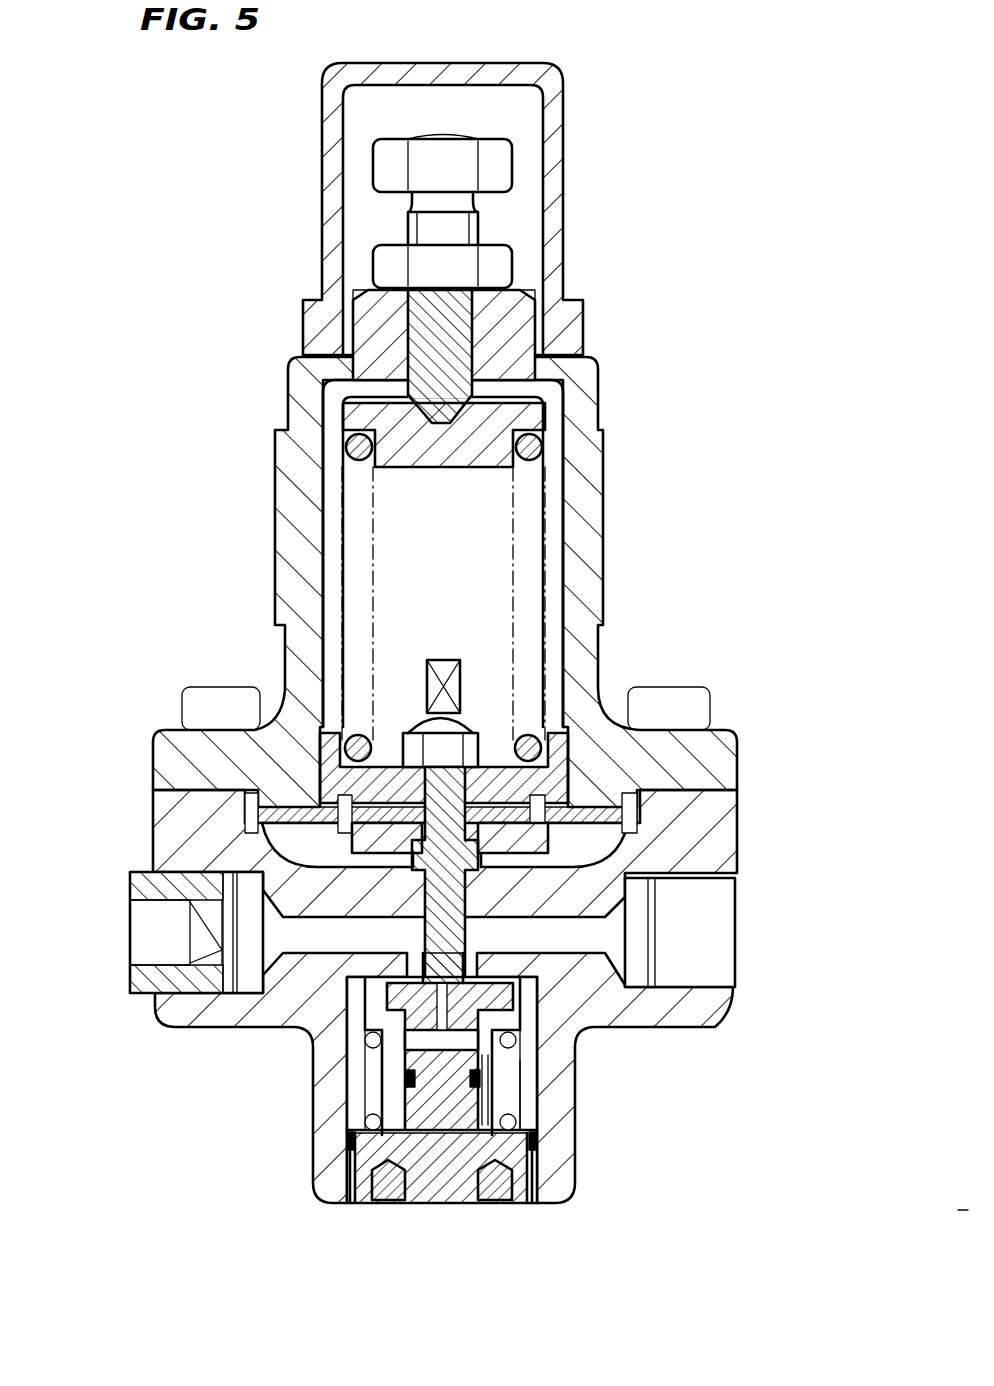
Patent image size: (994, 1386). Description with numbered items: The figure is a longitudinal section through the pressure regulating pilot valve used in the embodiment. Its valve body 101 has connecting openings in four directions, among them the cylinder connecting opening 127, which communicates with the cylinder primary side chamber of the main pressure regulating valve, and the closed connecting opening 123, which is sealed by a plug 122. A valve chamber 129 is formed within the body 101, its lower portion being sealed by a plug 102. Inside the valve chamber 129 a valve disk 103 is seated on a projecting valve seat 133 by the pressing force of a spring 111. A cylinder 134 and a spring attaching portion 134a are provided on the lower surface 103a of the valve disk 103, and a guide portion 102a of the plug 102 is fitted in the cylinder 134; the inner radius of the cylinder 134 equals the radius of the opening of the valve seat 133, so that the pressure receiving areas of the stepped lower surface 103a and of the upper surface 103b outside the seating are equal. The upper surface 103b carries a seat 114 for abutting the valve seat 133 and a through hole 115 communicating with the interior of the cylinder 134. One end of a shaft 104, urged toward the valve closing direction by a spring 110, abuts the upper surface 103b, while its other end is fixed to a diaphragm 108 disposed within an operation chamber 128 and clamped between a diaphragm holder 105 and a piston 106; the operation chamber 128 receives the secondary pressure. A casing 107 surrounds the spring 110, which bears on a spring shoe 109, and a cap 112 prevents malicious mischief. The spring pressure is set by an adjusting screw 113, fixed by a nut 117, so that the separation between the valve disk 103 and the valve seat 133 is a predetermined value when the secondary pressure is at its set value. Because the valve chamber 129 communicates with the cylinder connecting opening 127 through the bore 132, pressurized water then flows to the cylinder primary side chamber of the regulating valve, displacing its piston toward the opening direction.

The valve body 101 is at (740, 836).
The plug 102 is at (435, 1203).
The guide portion 102a is at (350, 1200).
The valve disk 103 is at (530, 1140).
The lower surface 103a is at (373, 1122).
The upper surface 103b is at (365, 1000).
The shaft 104 is at (560, 1040).
The diaphragm holder 105 is at (480, 848).
The piston 106 is at (565, 720).
The casing 107 is at (600, 475).
The diaphragm 108 is at (640, 805).
The spring shoe 109 is at (545, 412).
The spring 110 is at (548, 558).
The spring 111 is at (525, 1120).
The cap 112 is at (565, 90).
The adjusting screw 113 is at (513, 170).
The seat 114 is at (375, 1040).
The through hole 115 is at (440, 1050).
The nut 117 is at (513, 268).
The plug 122 is at (130, 945).
The closed connecting opening 123 is at (185, 965).
The cylinder connecting opening 127 is at (735, 960).
The operation chamber 128 is at (565, 858).
The valve chamber 129 is at (540, 1145).
The bore 132 is at (620, 1020).
The valve seat 133 is at (500, 1060).
The cylinder 134 is at (497, 1190).
The spring attaching portion 134a is at (405, 1078).